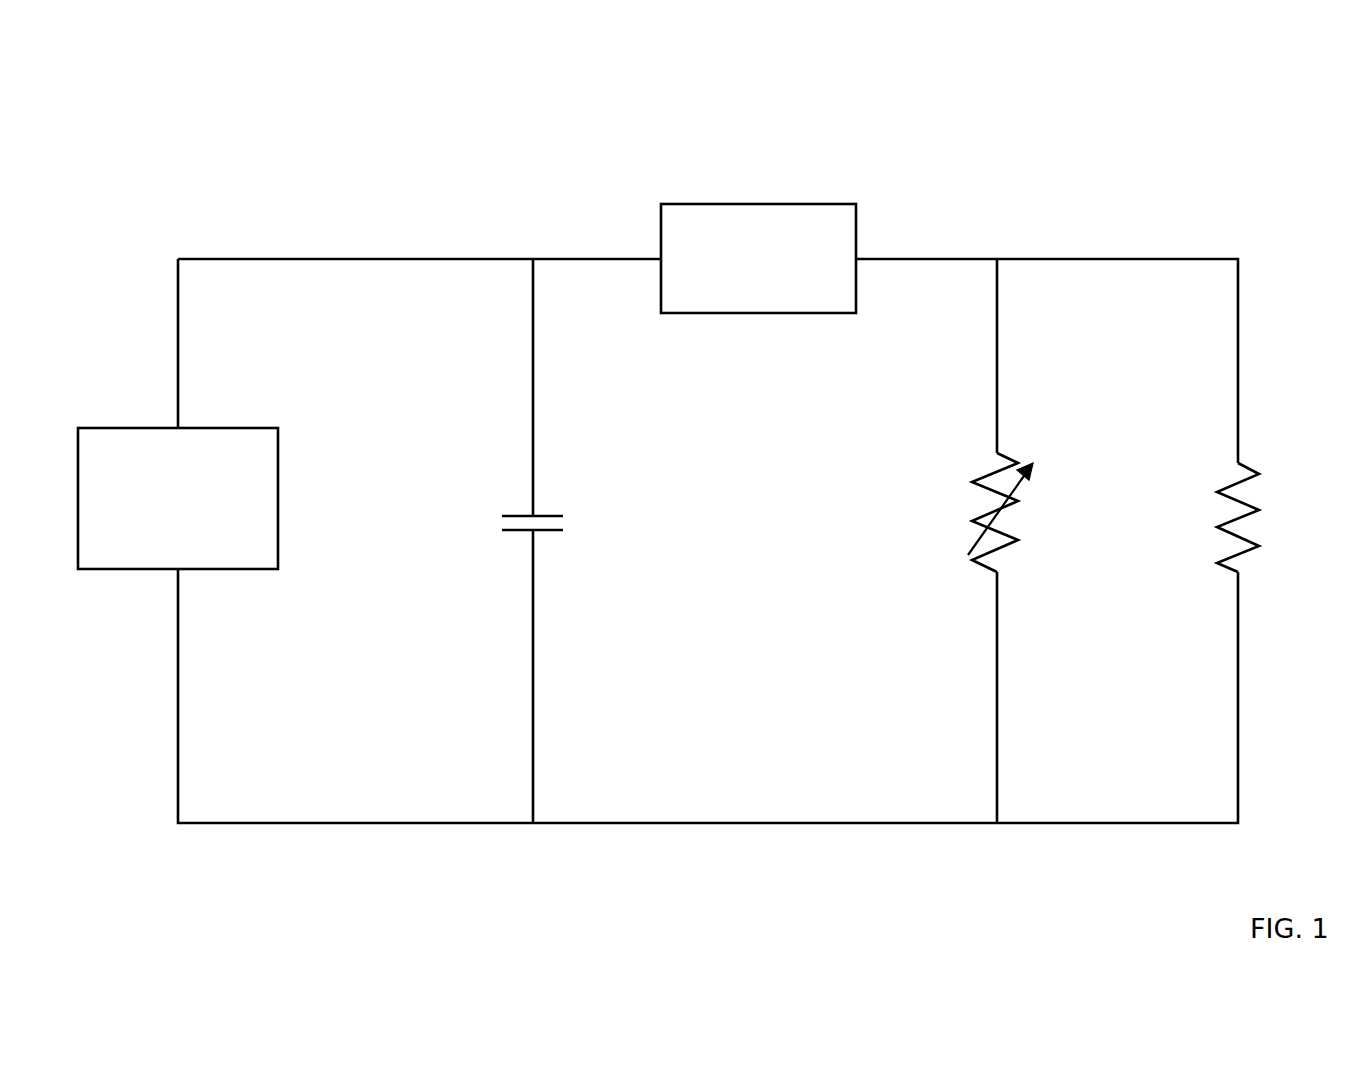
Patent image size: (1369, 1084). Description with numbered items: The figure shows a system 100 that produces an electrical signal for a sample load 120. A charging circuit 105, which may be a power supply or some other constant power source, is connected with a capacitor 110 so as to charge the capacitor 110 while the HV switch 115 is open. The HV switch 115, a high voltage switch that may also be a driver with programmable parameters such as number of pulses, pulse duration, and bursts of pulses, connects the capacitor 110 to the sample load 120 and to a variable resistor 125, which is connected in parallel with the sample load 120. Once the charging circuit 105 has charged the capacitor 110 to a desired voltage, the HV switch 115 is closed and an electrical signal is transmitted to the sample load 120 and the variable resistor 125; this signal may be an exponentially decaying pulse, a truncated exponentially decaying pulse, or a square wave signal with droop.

The system 100 is at (1152, 134).
The charging circuit 105 is at (132, 427).
The capacitor 110 is at (493, 515).
The HV switch 115 is at (726, 204).
The sample load 120 is at (1263, 475).
The variable resistor 125 is at (953, 528).